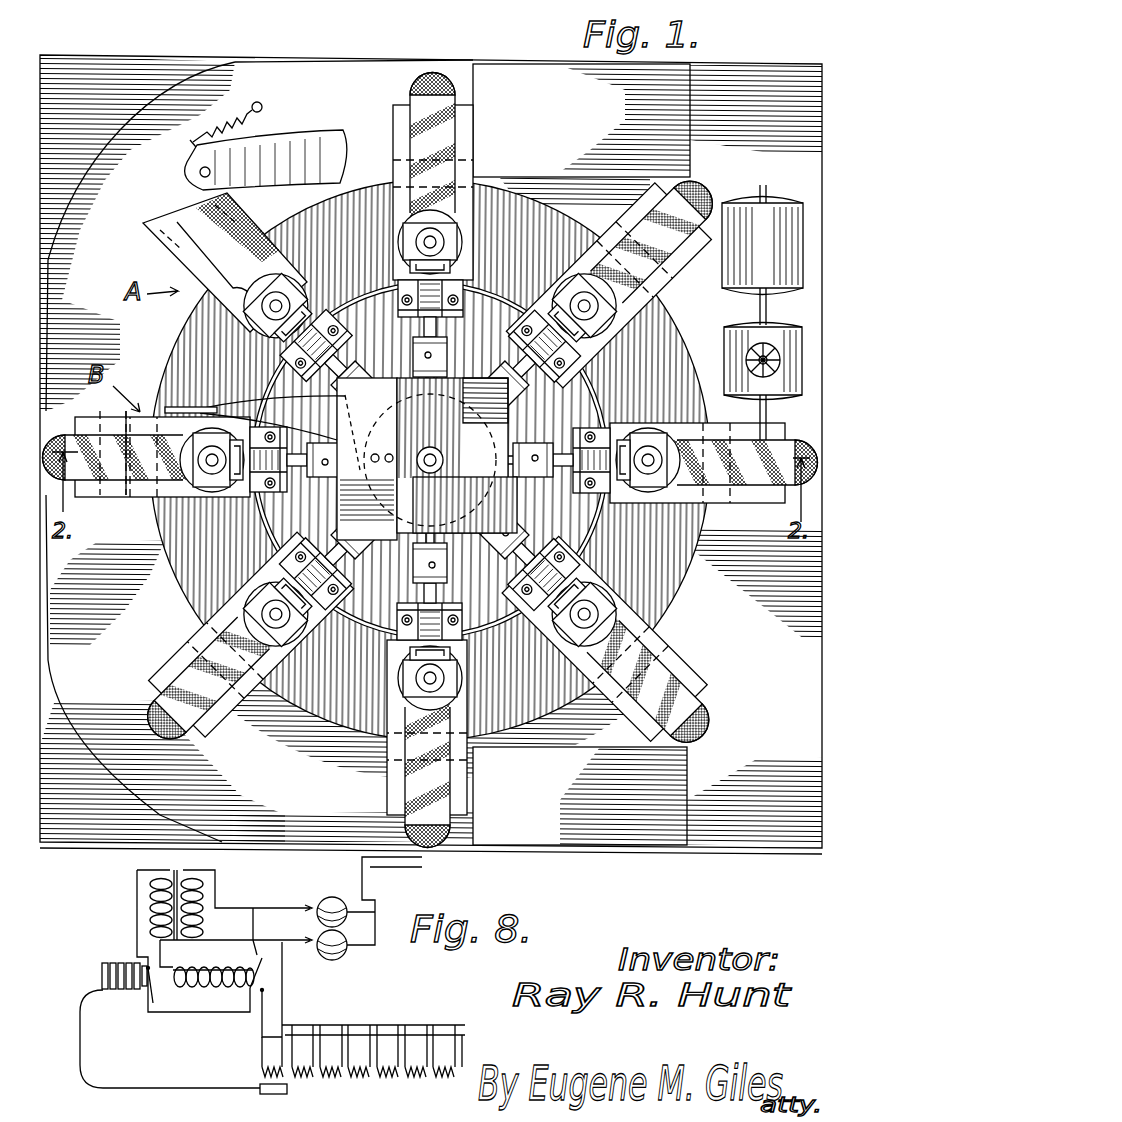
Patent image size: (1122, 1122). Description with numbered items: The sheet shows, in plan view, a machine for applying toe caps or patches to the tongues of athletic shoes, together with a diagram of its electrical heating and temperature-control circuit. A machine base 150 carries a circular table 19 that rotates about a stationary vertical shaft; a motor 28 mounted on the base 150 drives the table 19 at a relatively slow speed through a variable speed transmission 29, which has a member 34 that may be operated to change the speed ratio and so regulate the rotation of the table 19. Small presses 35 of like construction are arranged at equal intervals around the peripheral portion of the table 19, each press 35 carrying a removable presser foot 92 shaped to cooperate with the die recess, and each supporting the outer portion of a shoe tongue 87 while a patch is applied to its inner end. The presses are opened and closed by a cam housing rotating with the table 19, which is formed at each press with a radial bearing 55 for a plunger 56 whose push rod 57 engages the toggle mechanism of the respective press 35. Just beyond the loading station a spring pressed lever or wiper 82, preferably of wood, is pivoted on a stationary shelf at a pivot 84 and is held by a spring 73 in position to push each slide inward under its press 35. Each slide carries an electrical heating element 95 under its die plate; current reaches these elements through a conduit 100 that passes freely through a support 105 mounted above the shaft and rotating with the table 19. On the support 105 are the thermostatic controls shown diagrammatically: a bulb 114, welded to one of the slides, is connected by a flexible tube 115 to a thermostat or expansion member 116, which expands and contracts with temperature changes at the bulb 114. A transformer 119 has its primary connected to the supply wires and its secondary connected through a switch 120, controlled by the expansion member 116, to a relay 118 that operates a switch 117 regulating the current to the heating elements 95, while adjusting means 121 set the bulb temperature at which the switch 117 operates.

In FIG. 1, the machine base 150 is at (779, 78).
In FIG. 1, the circular table 19 is at (655, 600).
In FIG. 1, the small press 35 is at (482, 276).
In FIG. 1, the shoe tongue 87 is at (455, 96).
In FIG. 1, the presser foot 92 is at (420, 223).
In FIG. 1, the push rod 57 is at (282, 516).
In FIG. 1, the radial bearing 55 is at (425, 352).
In FIG. 1, the plunger 56 is at (519, 526).
In FIG. 1, the conduit 100 is at (367, 459).
In FIG. 1, the support 105 is at (440, 455).
In FIG. 1, the thermostat 116 is at (467, 486).
In FIG. 8, the thermostat 116 is at (112, 962).
In FIG. 1, the adjusting means 121 is at (376, 455).
In FIG. 1, the transformer 119 is at (343, 397).
In FIG. 8, the transformer 119 is at (157, 862).
In FIG. 1, the flexible tube 115 is at (276, 418).
In FIG. 8, the flexible tube 115 is at (178, 1086).
In FIG. 1, the bulb 114 is at (190, 408).
In FIG. 8, the bulb 114 is at (281, 1093).
In FIG. 1, the spring pressed lever 82 is at (337, 152).
In FIG. 1, the pivot 84 is at (200, 173).
In FIG. 1, the spring 73 is at (263, 110).
In FIG. 1, the motor 28 is at (785, 200).
In FIG. 1, the variable speed transmission 29 is at (722, 340).
In FIG. 1, the speed ratio member 34 is at (773, 347).
In FIG. 8, the switch 120 is at (139, 1002).
In FIG. 8, the relay 118 is at (221, 999).
In FIG. 8, the switch 117 is at (256, 1012).
In FIG. 8, the electrical heating element 95 is at (360, 1086).